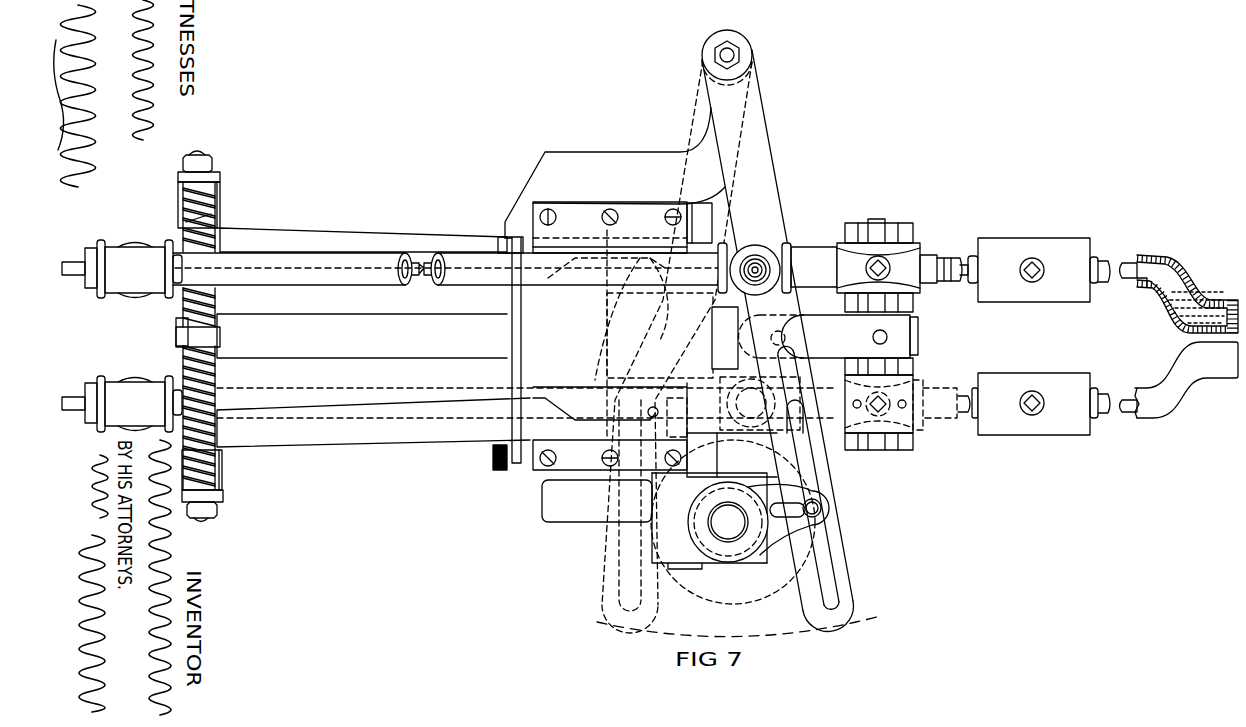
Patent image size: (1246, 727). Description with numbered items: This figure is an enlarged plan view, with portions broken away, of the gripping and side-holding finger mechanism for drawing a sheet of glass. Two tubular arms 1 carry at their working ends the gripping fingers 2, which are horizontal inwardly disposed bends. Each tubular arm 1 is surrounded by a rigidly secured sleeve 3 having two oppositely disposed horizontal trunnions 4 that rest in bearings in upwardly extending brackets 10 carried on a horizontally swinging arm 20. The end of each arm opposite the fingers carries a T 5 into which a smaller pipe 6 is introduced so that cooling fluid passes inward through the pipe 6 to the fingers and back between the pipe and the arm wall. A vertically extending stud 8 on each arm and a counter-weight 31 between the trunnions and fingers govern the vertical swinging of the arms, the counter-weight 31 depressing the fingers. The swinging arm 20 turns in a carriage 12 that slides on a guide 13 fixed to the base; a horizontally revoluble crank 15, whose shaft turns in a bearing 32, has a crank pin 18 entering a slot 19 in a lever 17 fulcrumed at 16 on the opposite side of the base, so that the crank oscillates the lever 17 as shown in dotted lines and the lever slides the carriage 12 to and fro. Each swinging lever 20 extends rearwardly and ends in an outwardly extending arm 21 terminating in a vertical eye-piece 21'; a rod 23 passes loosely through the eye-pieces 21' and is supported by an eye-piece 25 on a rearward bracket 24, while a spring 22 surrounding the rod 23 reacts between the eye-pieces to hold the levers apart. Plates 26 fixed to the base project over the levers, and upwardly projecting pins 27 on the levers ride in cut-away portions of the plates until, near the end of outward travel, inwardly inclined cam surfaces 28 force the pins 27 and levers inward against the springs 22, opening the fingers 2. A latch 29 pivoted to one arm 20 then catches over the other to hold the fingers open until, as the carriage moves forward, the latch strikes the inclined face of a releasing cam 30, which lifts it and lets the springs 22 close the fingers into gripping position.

The tubular arm 1 is at (937, 258).
The gripping finger 2 is at (1172, 360).
The sleeve 3 is at (835, 243).
The trunnion 4 is at (880, 222).
The T fitting 5 is at (145, 262).
The pipe 6 is at (70, 262).
The stud 8 is at (768, 247).
The bracket 10 is at (912, 225).
The carriage 12 is at (905, 350).
The guide 13 is at (915, 325).
The crank 15 is at (832, 500).
The fulcrum 16 is at (752, 52).
The lever 17 is at (722, 193).
The crank pin 18 is at (828, 515).
The slot 19 is at (843, 590).
The swinging arm 20 is at (375, 232).
The arm 21 is at (227, 304).
The eye-piece 21' is at (234, 507).
The spring 22 is at (218, 206).
The rod 23 is at (208, 228).
The bracket 24 is at (340, 330).
The eye-piece 25 is at (190, 337).
The plate 26 is at (530, 208).
The pin 27 is at (640, 323).
The cam surface 28 is at (640, 262).
The latch 29 is at (510, 470).
The releasing cam 30 is at (493, 457).
The counter-weight 31 is at (1025, 247).
The bearing 32 is at (658, 521).